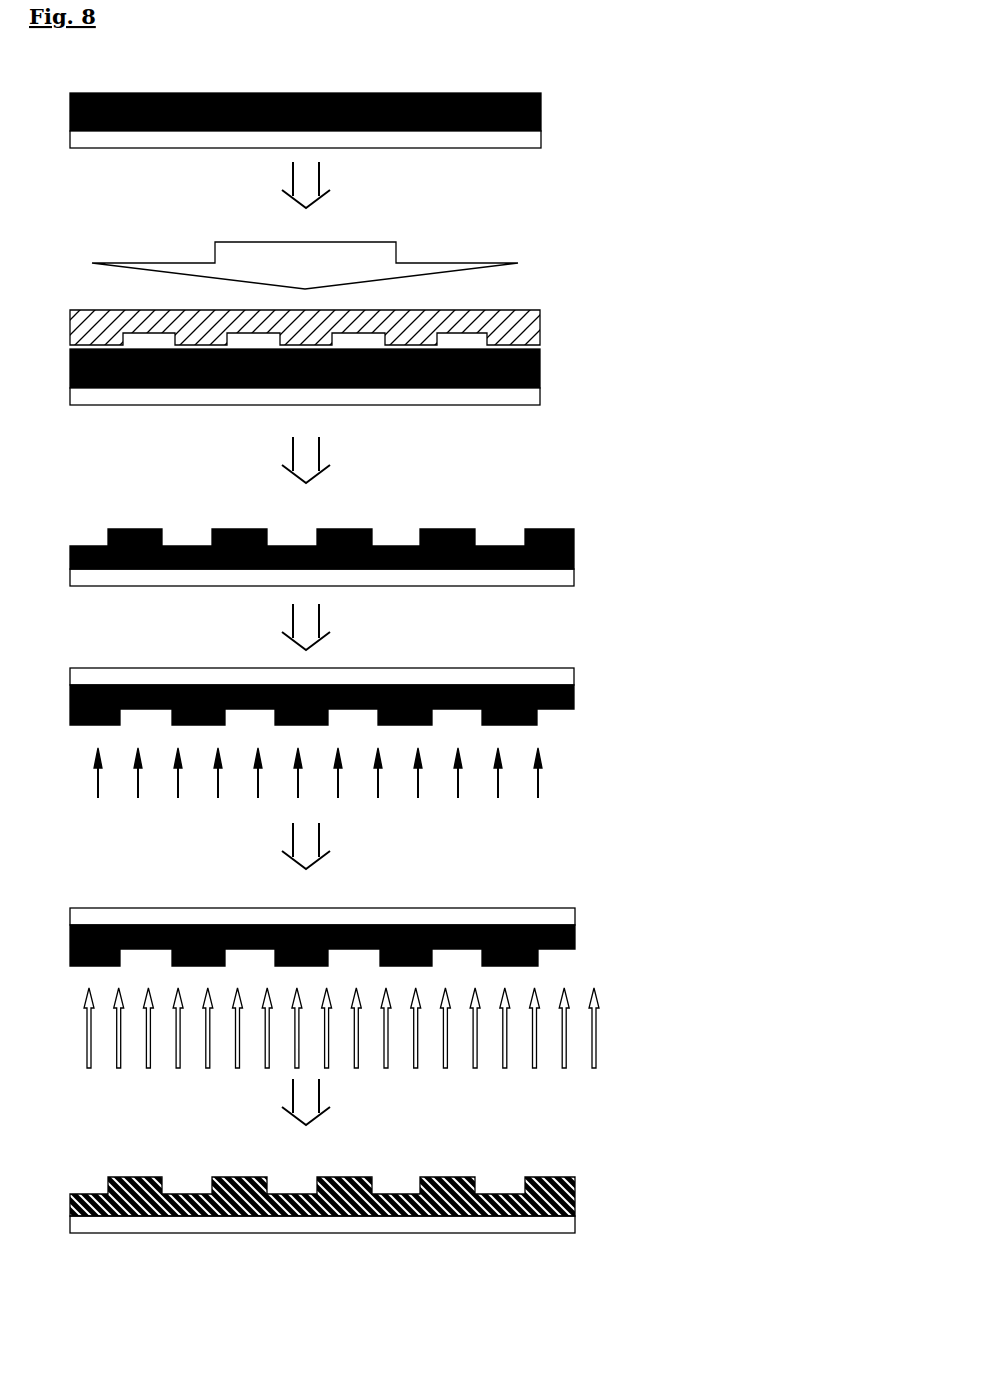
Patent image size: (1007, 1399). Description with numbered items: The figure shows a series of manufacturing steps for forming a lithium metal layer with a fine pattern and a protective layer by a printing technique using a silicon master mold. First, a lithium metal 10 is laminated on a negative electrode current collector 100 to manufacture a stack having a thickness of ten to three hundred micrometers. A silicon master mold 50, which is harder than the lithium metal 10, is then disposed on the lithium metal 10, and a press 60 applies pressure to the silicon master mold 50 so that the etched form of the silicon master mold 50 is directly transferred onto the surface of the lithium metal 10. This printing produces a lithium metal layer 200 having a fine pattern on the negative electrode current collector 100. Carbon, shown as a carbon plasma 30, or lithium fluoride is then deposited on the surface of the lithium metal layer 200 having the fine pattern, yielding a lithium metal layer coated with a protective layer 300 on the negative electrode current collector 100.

The lithium metal 10 is at (547, 113).
The negative electrode current collector 100 is at (548, 143).
The press 60 is at (527, 257).
The silicon master mold 50 is at (546, 325).
The lithium metal layer having fine pattern 200 is at (578, 547).
The carbon plasma 30 is at (598, 1030).
The lithium metal layer coated with protective layer 300 is at (578, 1196).